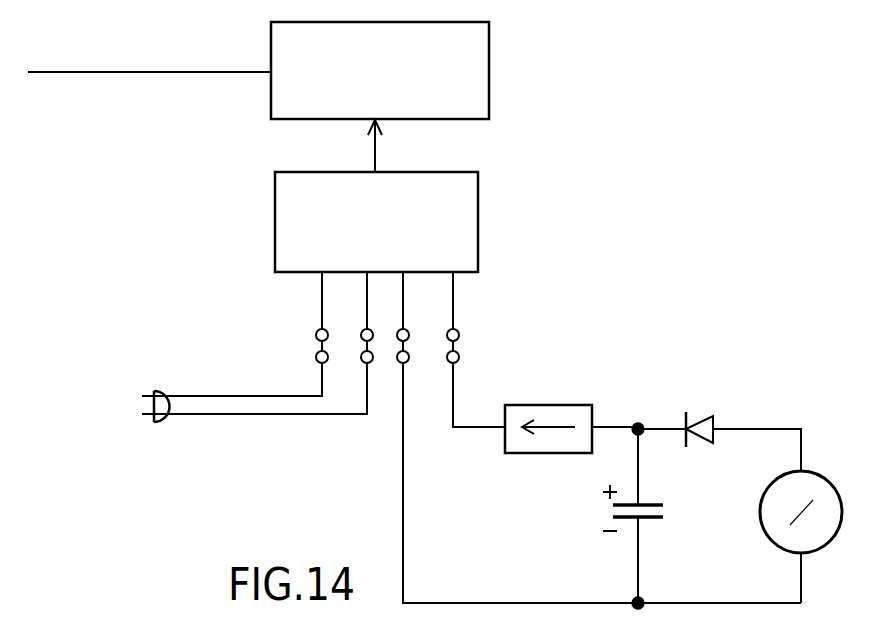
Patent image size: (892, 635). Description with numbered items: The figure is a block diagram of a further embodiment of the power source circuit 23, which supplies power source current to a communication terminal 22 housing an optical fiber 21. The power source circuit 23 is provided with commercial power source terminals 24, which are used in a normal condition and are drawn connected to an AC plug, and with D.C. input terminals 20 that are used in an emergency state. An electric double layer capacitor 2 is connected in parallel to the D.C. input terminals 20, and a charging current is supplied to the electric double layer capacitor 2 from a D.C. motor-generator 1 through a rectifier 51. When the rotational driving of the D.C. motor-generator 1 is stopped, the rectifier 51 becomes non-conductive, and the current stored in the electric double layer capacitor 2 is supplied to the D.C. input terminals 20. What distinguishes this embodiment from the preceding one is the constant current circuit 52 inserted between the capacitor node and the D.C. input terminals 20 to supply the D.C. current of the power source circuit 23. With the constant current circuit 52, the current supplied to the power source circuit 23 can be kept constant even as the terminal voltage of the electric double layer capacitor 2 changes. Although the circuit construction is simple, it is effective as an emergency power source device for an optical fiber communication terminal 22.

The D.C. motor-generator 1 is at (824, 472).
The electric double layer capacitor 2 is at (665, 513).
The D.C. input terminals 20 is at (440, 308).
The optical fiber 21 is at (153, 70).
The communication terminal 22 is at (492, 31).
The power source circuit 23 is at (481, 184).
The commercial power source terminals 24 is at (338, 312).
The rectifier 51 is at (706, 412).
The constant current circuit 52 is at (564, 404).